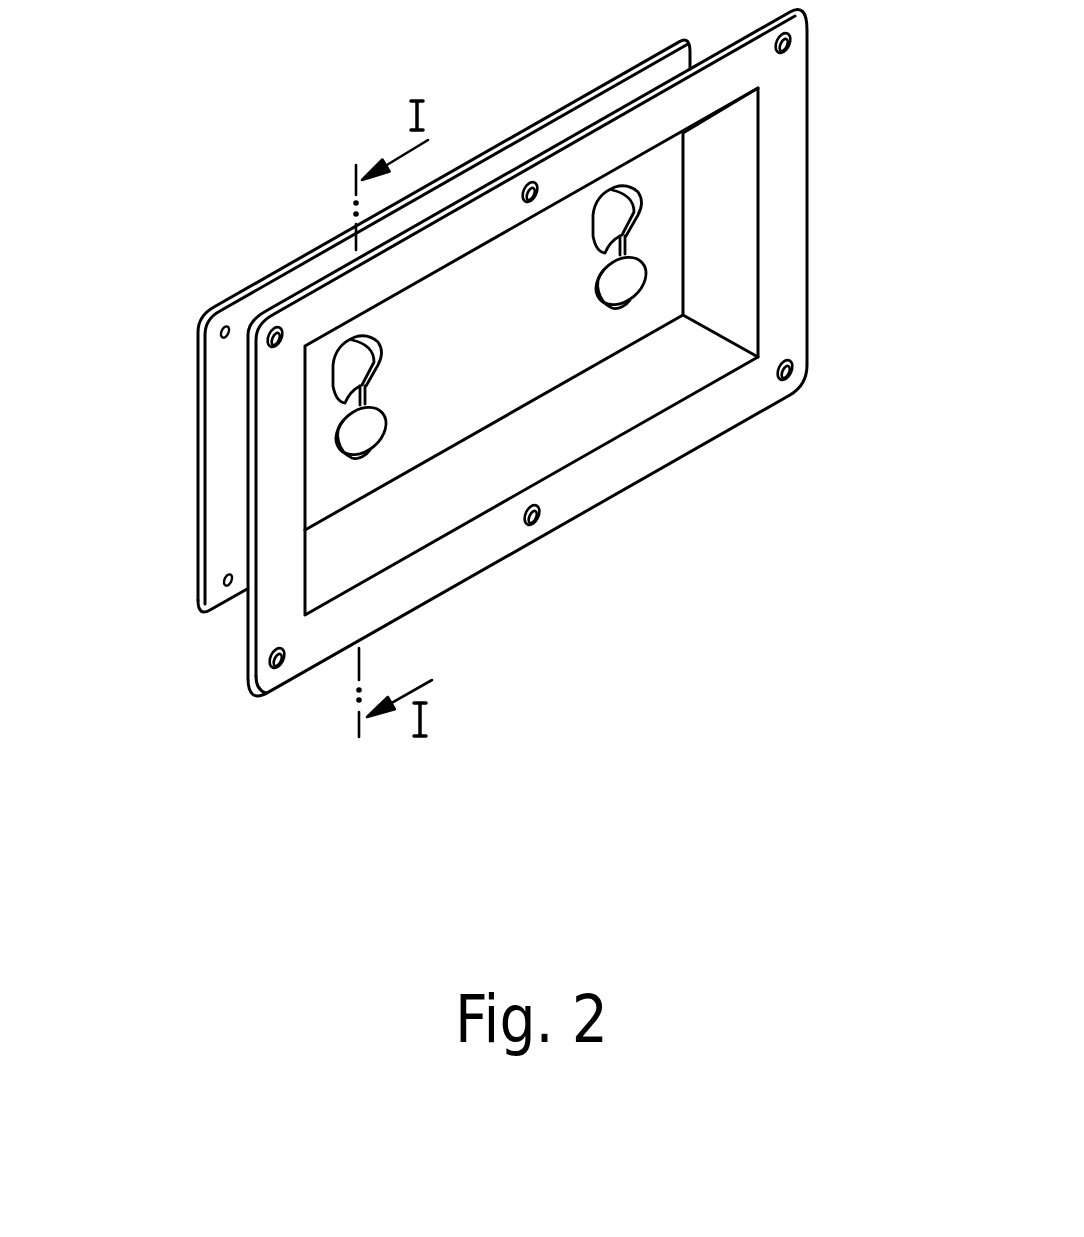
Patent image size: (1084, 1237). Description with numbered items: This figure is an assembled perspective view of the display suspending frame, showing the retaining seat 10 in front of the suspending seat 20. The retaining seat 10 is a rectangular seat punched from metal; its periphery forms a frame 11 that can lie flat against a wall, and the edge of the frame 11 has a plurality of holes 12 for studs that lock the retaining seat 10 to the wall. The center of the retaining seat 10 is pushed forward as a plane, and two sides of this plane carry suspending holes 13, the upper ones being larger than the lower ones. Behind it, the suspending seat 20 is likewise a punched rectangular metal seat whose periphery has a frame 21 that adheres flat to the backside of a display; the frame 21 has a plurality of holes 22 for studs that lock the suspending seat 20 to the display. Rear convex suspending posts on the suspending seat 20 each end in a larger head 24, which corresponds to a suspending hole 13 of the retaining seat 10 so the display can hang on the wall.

The retaining seat 10 is at (478, 591).
The frame 11 is at (413, 268).
The holes 12 is at (790, 45).
The suspending holes 13 is at (363, 353).
The larger head 24 is at (375, 420).
The suspending seat 20 is at (284, 237).
The frame 21 is at (200, 527).
The holes 22 is at (225, 338).